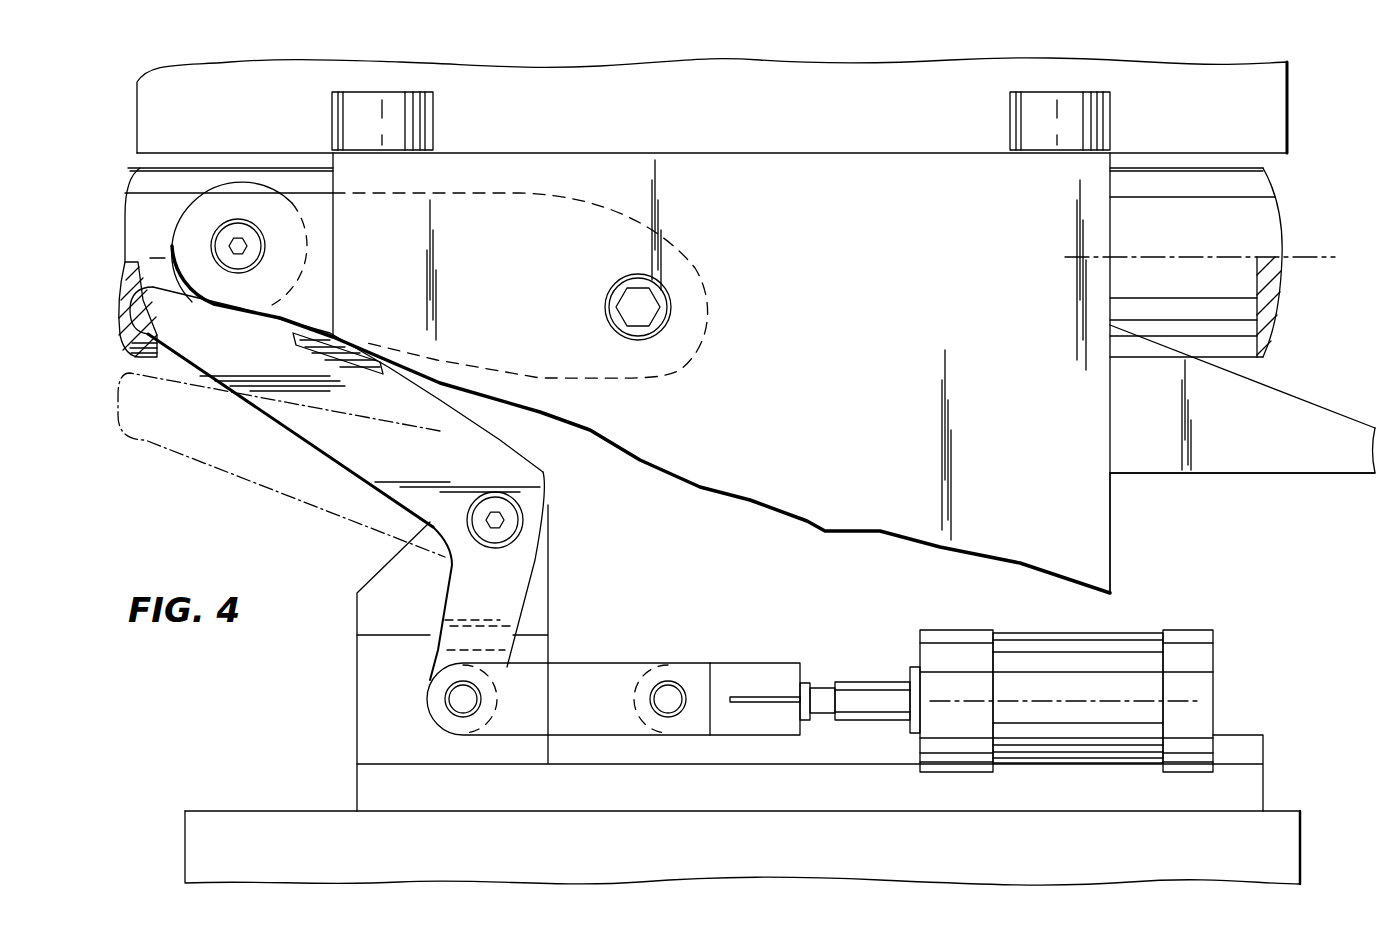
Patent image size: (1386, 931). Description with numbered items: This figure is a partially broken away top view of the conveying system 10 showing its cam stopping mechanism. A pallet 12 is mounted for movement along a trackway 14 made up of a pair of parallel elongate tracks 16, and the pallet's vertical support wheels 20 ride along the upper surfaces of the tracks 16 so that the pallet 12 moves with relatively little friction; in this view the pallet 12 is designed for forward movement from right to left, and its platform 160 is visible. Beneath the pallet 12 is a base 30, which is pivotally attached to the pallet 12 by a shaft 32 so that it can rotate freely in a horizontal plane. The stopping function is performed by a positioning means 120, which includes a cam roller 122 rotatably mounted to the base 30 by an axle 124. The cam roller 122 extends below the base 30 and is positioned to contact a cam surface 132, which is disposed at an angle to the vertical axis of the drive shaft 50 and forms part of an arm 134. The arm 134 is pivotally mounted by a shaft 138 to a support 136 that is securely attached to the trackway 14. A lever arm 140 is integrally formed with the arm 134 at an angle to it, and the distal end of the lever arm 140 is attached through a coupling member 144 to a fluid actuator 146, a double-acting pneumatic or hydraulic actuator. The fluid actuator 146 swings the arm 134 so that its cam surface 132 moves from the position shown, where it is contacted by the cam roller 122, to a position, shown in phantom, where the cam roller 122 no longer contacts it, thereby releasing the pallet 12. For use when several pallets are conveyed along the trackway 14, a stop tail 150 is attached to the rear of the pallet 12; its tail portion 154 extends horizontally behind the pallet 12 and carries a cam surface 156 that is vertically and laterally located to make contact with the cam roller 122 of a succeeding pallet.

The conveying system 10 is at (1270, 585).
The pallet 12 is at (822, 530).
The trackway 14 is at (672, 95).
The elongate tracks 16 is at (815, 116).
The vertical support wheels 20 is at (351, 125).
The base 30 is at (288, 187).
The shaft 32 is at (645, 303).
The drive shaft 50 is at (1158, 234).
The positioning means 120 is at (217, 418).
The cam roller 122 is at (177, 215).
The axle 124 is at (252, 250).
The cam surface 132 is at (300, 338).
The arm 134 is at (367, 445).
The support 136 is at (377, 602).
The shaft 138 is at (514, 522).
The lever arm 140 is at (467, 597).
The coupling member 144 is at (608, 668).
The fluid actuator 146 is at (1055, 672).
The stop tail 150 is at (1207, 480).
The tail portion 154 is at (1218, 437).
The cam surface 156 is at (1297, 395).
The platform 160 is at (850, 287).